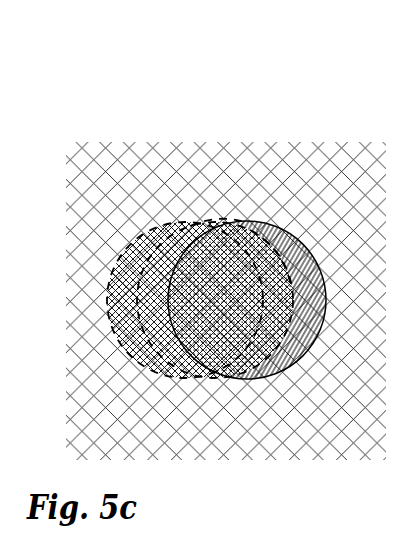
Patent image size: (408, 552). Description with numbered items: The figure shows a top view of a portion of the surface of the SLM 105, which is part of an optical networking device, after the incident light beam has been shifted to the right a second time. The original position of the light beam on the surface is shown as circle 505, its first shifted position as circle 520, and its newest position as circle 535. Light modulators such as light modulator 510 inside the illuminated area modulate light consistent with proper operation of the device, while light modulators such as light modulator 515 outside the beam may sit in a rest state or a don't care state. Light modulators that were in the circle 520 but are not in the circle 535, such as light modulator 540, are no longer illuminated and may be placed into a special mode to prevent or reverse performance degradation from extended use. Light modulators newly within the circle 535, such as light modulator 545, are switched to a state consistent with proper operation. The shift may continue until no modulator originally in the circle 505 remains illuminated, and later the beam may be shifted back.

The SLM 105 is at (101, 126).
The circle 505 is at (125, 245).
The light modulator 510 is at (173, 297).
The light modulator 515 is at (137, 398).
The circle 520 is at (211, 227).
The circle 535 is at (304, 243).
The light modulator 540 is at (153, 322).
The light modulator 545 is at (266, 225).